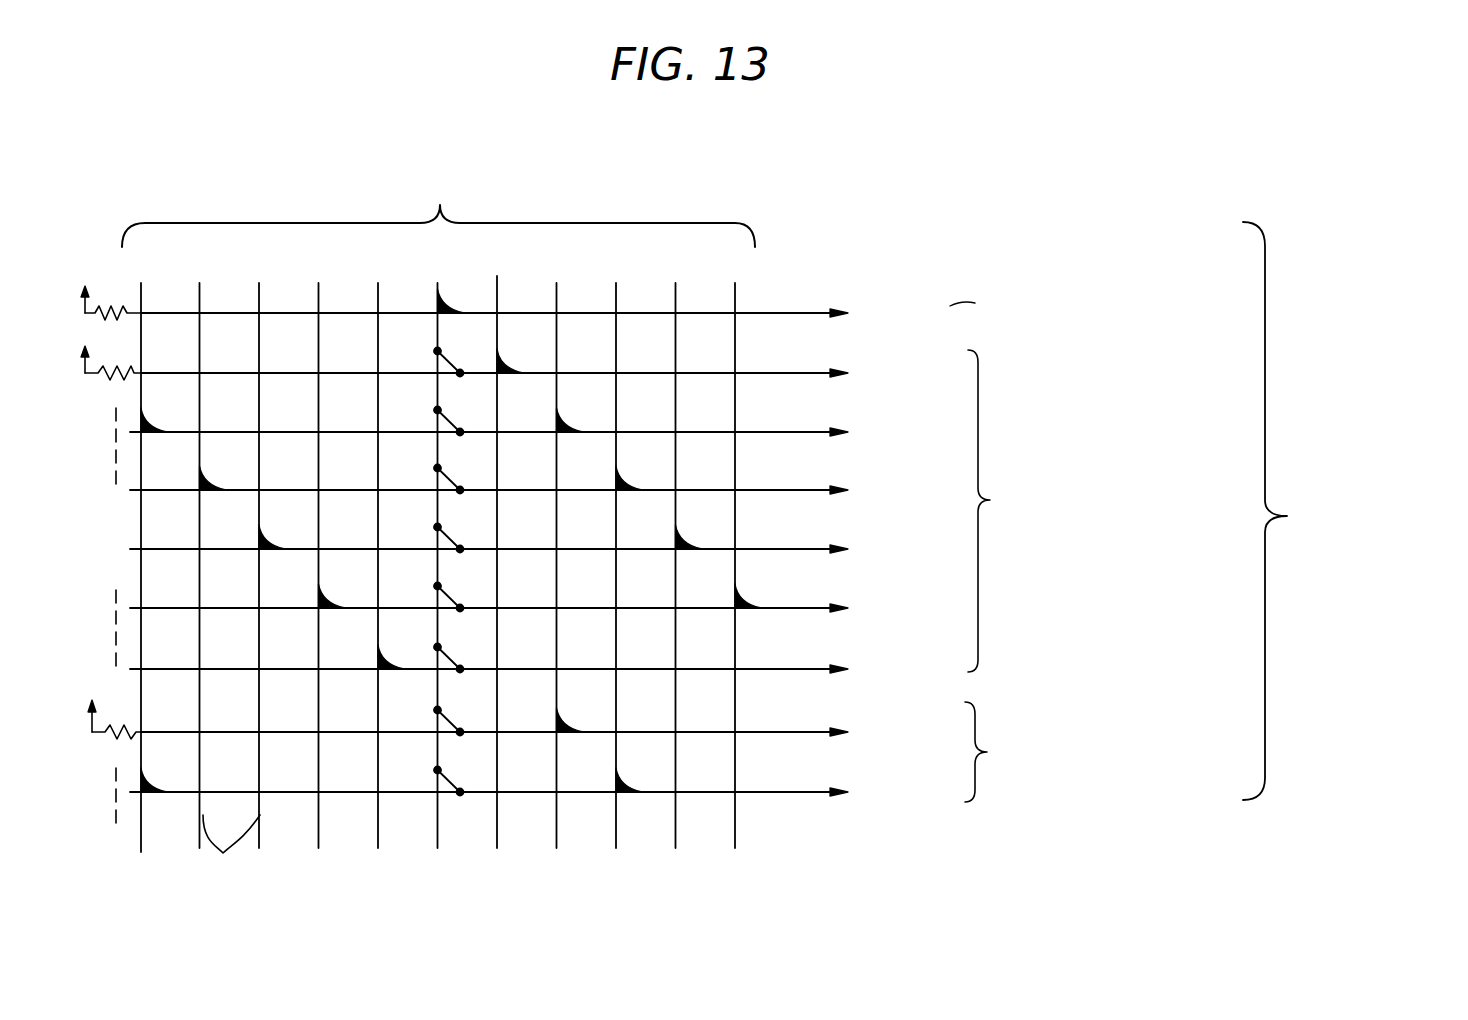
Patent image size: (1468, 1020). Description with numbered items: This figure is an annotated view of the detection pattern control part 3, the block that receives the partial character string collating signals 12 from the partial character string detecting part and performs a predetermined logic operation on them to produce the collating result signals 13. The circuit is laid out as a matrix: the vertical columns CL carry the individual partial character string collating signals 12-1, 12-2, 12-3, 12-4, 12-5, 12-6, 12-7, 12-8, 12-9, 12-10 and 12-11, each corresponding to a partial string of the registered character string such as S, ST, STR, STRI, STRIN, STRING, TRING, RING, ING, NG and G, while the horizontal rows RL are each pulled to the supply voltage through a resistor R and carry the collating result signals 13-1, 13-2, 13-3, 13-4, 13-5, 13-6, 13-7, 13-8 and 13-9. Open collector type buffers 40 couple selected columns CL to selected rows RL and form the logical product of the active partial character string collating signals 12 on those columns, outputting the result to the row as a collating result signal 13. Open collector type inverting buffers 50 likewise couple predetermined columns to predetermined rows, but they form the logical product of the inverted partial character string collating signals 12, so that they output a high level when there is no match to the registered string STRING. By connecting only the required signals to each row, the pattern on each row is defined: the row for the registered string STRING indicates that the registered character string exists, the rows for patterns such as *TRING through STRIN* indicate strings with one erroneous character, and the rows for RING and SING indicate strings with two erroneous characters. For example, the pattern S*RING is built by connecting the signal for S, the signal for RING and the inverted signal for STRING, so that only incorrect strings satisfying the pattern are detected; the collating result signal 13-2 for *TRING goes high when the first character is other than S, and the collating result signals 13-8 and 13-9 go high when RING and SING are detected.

The detection pattern control part 3 is at (292, 192).
The partial character string collating signals 12 is at (735, 291).
The partial character string collating signal 12-1 is at (118, 567).
The partial character string collating signal 12-2 is at (178, 565).
The partial character string collating signal 12-3 is at (237, 565).
The partial character string collating signal 12-4 is at (296, 565).
The partial character string collating signal 12-5 is at (356, 565).
The partial character string collating signal 12-6 is at (415, 565).
The partial character string collating signal 12-7 is at (519, 561).
The partial character string collating signal 12-8 is at (541, 565).
The partial character string collating signal 12-9 is at (595, 565).
The partial character string collating signal 12-10 is at (656, 565).
The partial character string collating signal 12-11 is at (714, 565).
The collating result signals 13 is at (808, 312).
The collating result signal 13-1 is at (558, 305).
The collating result signal 13-2 is at (542, 365).
The collating result signal 13-3 is at (537, 424).
The collating result signal 13-4 is at (536, 482).
The collating result signal 13-5 is at (540, 541).
The collating result signal 13-6 is at (536, 600).
The collating result signal 13-7 is at (535, 661).
The collating result signal 13-8 is at (541, 725).
The collating result signal 13-9 is at (535, 784).
The open collector type buffer 40 is at (447, 308).
The open collector type inverting buffer 50 is at (451, 362).
The resistor R is at (111, 512).
The row RL is at (757, 669).
The column CL is at (231, 854).